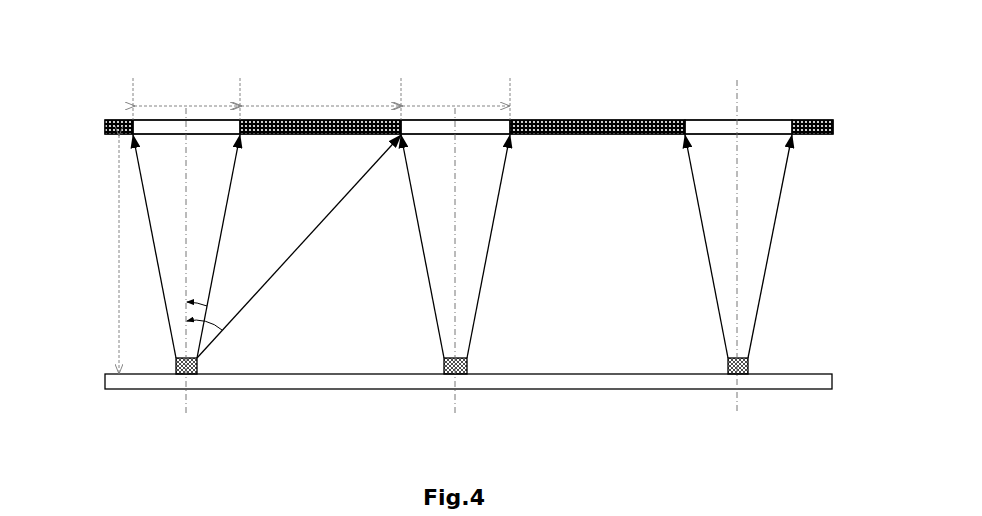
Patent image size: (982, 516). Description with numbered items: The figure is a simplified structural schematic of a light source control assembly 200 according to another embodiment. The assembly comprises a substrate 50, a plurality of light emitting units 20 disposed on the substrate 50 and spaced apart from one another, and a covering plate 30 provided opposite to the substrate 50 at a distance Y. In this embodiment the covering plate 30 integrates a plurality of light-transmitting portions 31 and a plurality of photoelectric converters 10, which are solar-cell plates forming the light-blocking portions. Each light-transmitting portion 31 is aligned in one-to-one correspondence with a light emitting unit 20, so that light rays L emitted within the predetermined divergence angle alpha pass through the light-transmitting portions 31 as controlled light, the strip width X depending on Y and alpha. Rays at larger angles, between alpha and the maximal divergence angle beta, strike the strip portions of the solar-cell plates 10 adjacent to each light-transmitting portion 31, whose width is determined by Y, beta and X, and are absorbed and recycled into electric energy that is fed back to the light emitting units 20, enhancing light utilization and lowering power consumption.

The light source control assembly 200 is at (118, 70).
The photoelectric converter 10 is at (600, 110).
The covering plate 30 is at (832, 123).
The light-transmitting portion 31 is at (726, 111).
The light emitting unit 20 is at (748, 367).
The substrate 50 is at (832, 378).